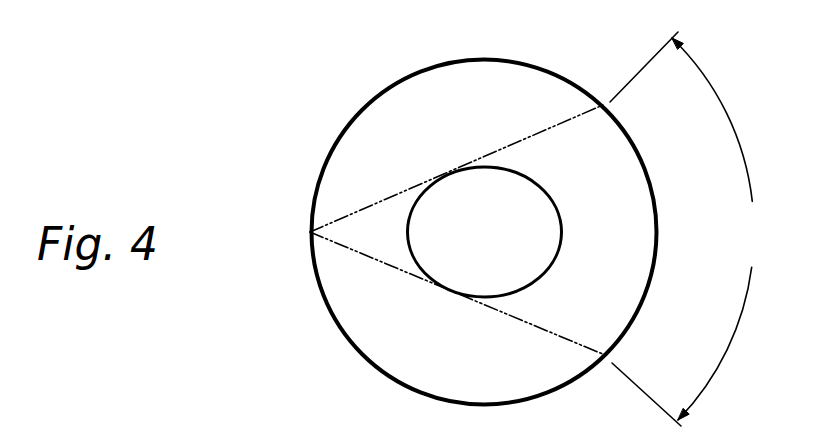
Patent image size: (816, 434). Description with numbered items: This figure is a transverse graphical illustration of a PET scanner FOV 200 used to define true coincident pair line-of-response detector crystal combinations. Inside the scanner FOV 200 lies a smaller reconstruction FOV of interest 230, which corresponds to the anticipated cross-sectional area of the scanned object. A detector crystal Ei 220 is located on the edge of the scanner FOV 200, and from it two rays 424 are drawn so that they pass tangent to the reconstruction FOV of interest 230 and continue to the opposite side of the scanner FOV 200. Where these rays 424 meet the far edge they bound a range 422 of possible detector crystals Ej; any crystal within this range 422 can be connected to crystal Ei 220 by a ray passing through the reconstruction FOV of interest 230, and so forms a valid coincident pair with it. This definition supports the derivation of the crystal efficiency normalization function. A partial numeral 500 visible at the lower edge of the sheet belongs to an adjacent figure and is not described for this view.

The PET scanner FOV 200 is at (350, 122).
The detector crystal Ei 220 is at (262, 230).
The reconstruction FOV of interest 230 is at (407, 246).
The range of possible detector crystals 422 is at (660, 232).
The rays 424 is at (542, 132).
The partial numeral from adjacent figure 500 is at (82, 432).